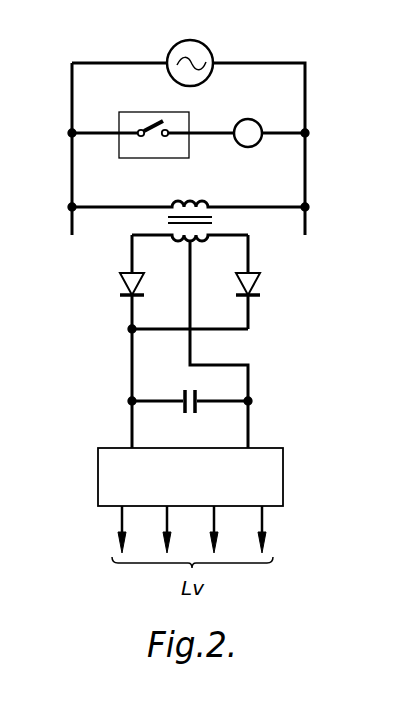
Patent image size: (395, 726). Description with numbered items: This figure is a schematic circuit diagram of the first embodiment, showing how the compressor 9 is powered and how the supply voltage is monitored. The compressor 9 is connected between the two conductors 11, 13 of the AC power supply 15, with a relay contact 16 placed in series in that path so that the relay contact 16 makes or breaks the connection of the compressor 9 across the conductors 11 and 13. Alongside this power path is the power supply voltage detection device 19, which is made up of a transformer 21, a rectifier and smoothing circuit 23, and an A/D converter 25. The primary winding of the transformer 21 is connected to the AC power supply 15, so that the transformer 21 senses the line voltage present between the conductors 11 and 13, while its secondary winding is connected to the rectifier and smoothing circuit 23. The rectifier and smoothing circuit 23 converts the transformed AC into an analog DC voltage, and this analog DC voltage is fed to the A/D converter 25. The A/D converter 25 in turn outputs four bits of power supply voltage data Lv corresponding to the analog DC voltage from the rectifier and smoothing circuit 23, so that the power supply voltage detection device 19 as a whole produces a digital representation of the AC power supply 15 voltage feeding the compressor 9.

The compressor 9 is at (250, 119).
The conductor 11 is at (72, 104).
The conductor 13 is at (305, 102).
The AC power supply 15 is at (205, 43).
The relay contact 16 is at (146, 112).
The power supply voltage detection device 19 is at (253, 349).
The transformer 21 is at (162, 218).
The rectifier and smoothing circuit 23 is at (120, 365).
The A/D converter 25 is at (284, 470).